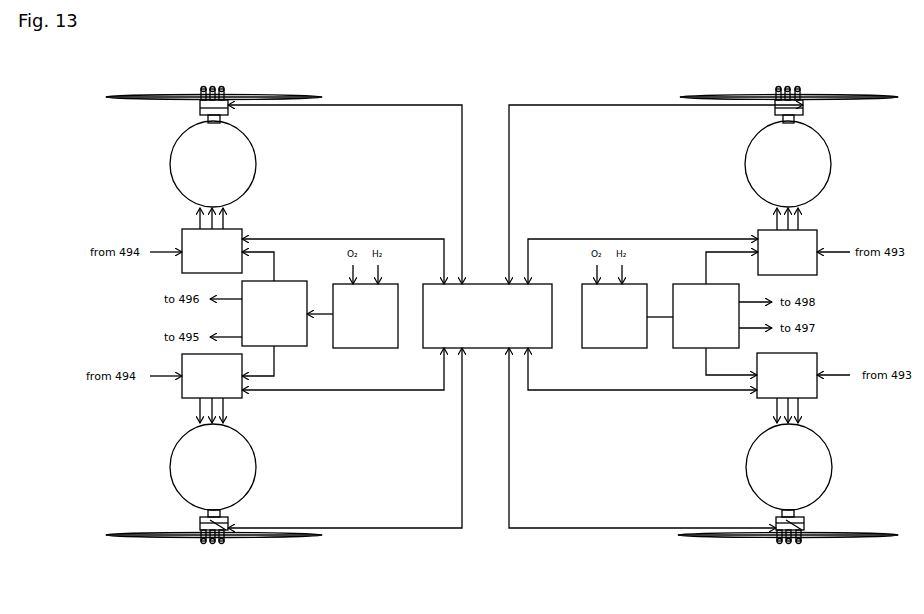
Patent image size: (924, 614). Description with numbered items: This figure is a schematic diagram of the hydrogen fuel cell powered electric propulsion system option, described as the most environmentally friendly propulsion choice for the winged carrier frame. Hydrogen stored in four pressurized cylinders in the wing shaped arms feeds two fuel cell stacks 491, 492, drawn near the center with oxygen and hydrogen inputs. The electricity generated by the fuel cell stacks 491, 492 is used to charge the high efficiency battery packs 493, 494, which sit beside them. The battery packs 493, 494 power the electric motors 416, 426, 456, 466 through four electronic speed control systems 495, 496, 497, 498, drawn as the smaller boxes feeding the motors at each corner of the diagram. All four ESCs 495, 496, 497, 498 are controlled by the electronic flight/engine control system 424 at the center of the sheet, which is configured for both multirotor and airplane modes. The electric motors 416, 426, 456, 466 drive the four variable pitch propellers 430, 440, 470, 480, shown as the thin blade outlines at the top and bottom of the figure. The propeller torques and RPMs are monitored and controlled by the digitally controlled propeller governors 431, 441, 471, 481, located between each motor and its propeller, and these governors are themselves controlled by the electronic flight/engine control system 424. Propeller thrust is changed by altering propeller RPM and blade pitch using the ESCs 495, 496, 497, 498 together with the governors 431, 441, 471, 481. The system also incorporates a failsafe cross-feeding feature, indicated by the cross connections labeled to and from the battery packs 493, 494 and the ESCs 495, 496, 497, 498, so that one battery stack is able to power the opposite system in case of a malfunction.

The variable pitch propeller 430 is at (200, 100).
The digitally controlled propeller governor 431 is at (218, 105).
The electric motor 416 is at (250, 142).
The electronic speed control system 498 is at (245, 229).
The electronic speed control system 497 is at (243, 399).
The high efficiency battery pack 493 is at (307, 346).
The fuel cell stack 491 is at (370, 348).
The electronic flight/engine control system 424 is at (487, 284).
The fuel cell stack 492 is at (615, 348).
The high efficiency battery pack 494 is at (685, 348).
The electronic speed control system 496 is at (758, 235).
The electronic speed control system 495 is at (757, 398).
The variable pitch propeller 470 is at (775, 102).
The digitally controlled propeller governor 471 is at (786, 120).
The electric motor 456 is at (817, 197).
The electric motor 426 is at (257, 467).
The variable pitch propeller 440 is at (200, 545).
The digitally controlled propeller governor 441 is at (223, 545).
The electric motor 466 is at (747, 463).
The variable pitch propeller 480 is at (783, 548).
The digitally controlled propeller governor 481 is at (800, 547).